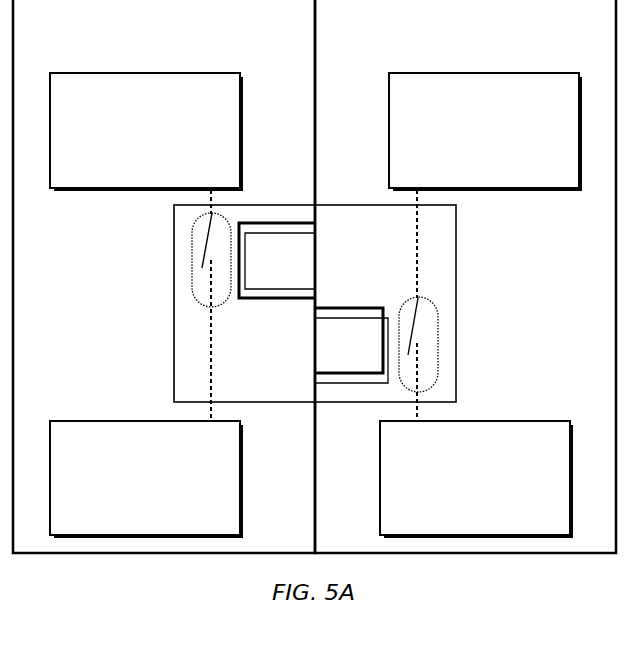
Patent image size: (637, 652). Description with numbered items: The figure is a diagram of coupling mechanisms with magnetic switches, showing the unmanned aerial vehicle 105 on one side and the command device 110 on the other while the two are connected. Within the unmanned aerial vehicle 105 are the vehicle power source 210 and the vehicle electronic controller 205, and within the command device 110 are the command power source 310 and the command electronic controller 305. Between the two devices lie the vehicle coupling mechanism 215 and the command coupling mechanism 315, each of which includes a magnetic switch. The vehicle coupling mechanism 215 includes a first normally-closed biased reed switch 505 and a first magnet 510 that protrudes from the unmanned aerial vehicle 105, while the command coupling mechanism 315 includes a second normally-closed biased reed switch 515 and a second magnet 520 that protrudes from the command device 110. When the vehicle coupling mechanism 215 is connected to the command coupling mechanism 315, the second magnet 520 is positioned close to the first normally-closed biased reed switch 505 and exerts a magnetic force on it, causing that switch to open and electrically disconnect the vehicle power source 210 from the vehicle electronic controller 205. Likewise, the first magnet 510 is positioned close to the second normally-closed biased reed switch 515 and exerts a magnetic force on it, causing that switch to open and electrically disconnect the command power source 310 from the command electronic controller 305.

The unmanned aerial vehicle 105 is at (228, 56).
The command device 110 is at (483, 56).
The vehicle power source 210 is at (165, 179).
The command power source 310 is at (502, 179).
The vehicle electronic controller 205 is at (165, 526).
The command electronic controller 305 is at (493, 526).
The vehicle coupling mechanism 215 is at (183, 280).
The command coupling mechanism 315 is at (445, 367).
The first normally-closed biased reed switch 505 is at (203, 293).
The second normally-closed biased reed switch 515 is at (427, 308).
The second magnet 520 is at (257, 253).
The first magnet 510 is at (372, 357).